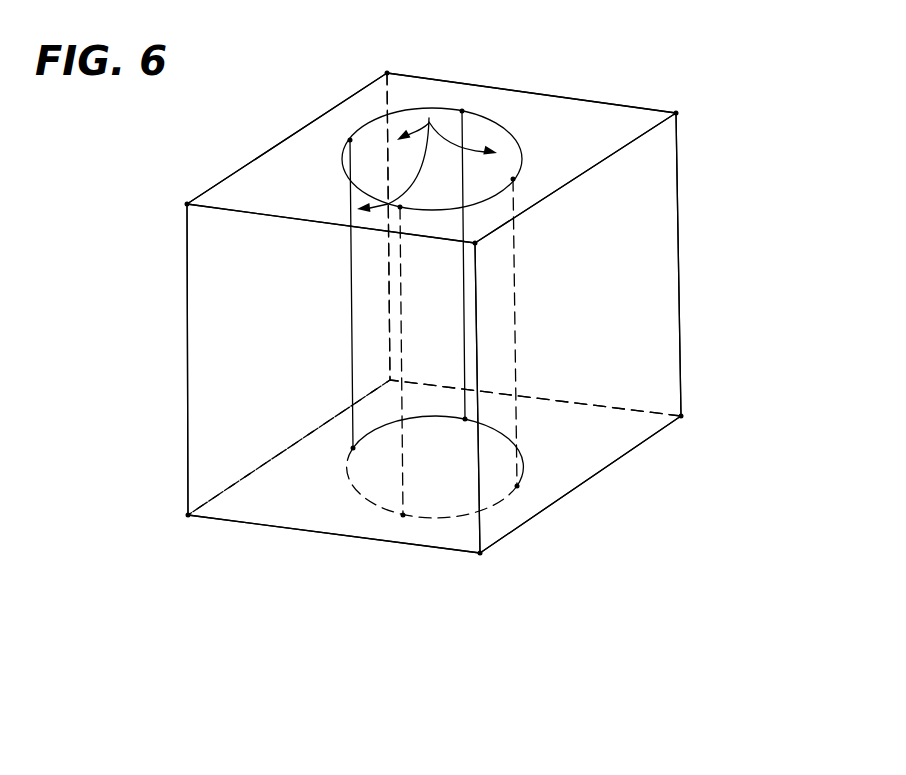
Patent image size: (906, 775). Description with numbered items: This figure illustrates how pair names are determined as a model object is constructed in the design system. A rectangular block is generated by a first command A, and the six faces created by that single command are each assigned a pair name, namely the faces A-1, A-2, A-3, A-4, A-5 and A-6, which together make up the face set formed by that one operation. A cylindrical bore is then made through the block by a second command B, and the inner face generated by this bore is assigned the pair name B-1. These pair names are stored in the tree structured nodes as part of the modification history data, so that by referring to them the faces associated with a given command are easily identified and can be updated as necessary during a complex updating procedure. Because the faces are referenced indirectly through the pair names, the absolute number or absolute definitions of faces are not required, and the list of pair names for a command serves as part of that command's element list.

The pair name of a block face A-1 is at (560, 121).
The pair name of a block face A-2 is at (652, 223).
The pair name of a block face A-3 is at (642, 171).
The pair name of a block face A-4 is at (290, 176).
The pair name of a block face A-5 is at (229, 357).
The pair name of a block face A-6 is at (316, 492).
The pair name of cylindrical bore inner face B-1 is at (450, 227).